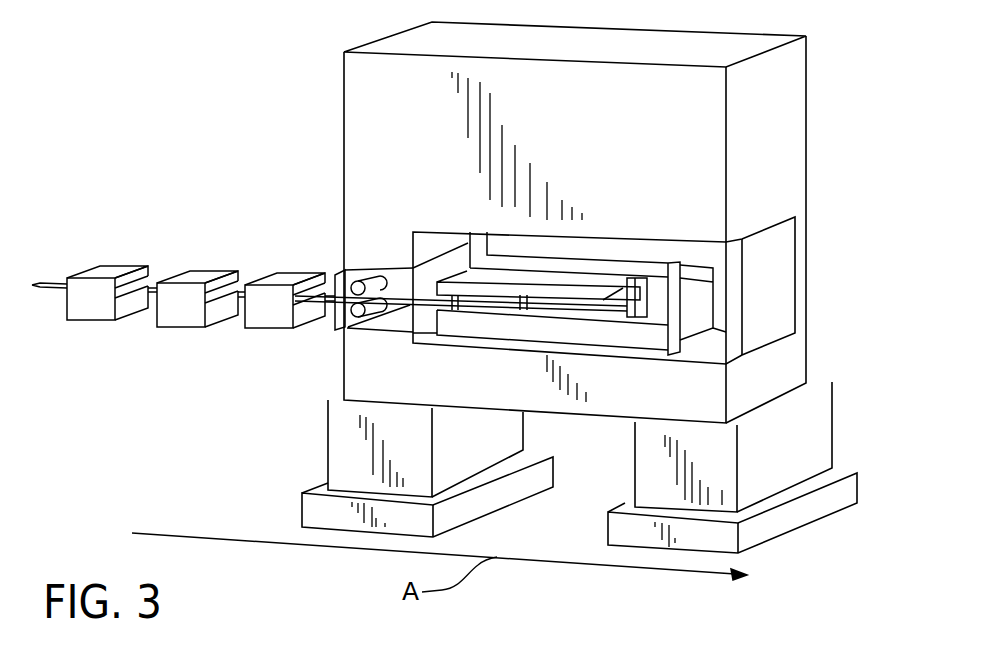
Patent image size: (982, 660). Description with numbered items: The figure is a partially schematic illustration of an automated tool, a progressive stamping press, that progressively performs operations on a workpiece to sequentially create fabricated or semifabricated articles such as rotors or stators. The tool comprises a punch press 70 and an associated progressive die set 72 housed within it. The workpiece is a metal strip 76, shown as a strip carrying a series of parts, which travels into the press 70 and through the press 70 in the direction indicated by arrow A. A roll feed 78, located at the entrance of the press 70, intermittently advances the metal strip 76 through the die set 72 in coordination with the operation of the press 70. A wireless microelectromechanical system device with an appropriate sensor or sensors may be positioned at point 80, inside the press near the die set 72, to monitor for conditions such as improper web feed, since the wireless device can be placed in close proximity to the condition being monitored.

The punch press 70 is at (323, 130).
The progressive die set 72 is at (462, 282).
The metal strip 76 is at (52, 284).
The roll feed 78 is at (333, 328).
The point 80 is at (643, 310).